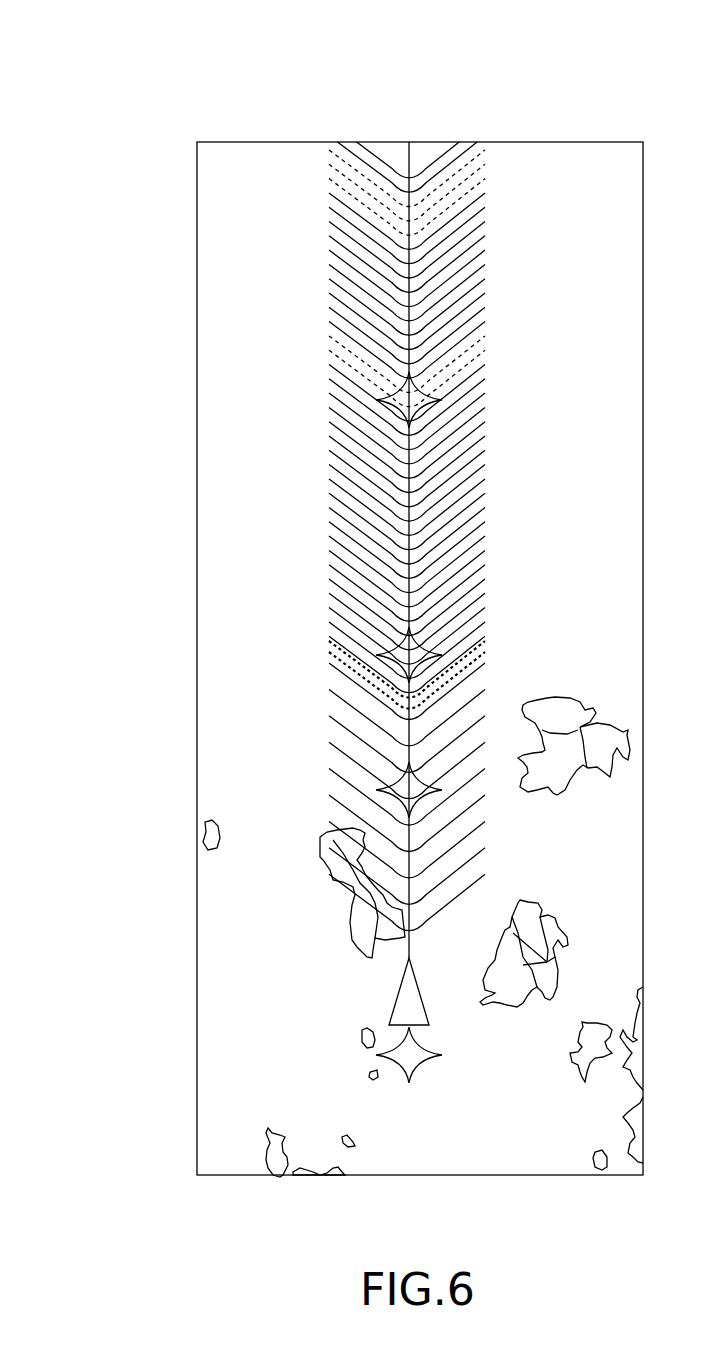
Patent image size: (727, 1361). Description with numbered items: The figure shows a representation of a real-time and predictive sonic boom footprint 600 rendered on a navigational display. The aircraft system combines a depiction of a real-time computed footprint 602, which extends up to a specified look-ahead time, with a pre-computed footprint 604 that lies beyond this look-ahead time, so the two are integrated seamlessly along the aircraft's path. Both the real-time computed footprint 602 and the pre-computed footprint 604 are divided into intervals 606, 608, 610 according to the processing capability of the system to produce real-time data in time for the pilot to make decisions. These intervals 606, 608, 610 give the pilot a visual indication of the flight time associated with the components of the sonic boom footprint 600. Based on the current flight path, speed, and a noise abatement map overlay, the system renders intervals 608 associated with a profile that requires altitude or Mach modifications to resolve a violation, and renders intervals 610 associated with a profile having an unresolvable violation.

The real-time and predictive sonic boom footprint 600 is at (146, 56).
The real-time computed footprint 602 is at (317, 657).
The pre-computed footprint 604 is at (317, 653).
The intervals 606 is at (484, 243).
The intervals 608 is at (480, 657).
The intervals 610 is at (484, 347).